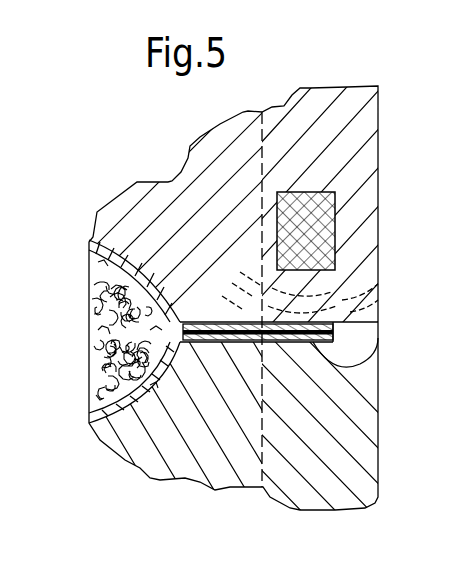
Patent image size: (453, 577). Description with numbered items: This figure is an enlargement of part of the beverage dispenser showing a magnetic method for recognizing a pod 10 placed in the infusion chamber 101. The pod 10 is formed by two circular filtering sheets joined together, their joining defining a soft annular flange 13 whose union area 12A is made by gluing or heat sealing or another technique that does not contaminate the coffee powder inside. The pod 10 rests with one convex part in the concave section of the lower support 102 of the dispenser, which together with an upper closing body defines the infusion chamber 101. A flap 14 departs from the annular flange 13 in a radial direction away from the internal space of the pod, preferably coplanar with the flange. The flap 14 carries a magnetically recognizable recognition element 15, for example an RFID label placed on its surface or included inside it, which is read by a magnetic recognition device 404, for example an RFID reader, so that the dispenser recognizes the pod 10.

The pod 10 is at (110, 315).
The infusion chamber 101 is at (125, 250).
The lower support 102 is at (202, 467).
The union area 12A is at (208, 320).
The annular flange 13 is at (232, 347).
The flap 14 is at (278, 347).
The recognition element 15 is at (380, 353).
The magnetic recognition device 404 is at (336, 248).